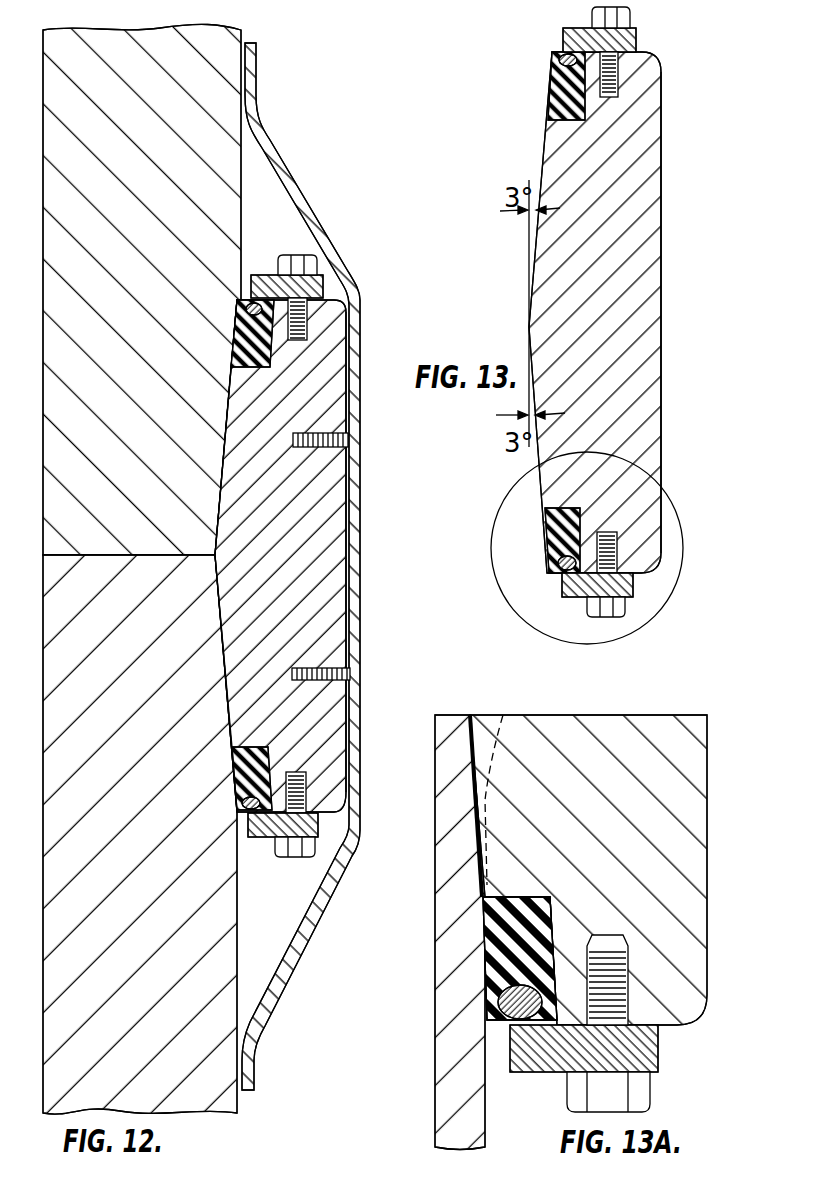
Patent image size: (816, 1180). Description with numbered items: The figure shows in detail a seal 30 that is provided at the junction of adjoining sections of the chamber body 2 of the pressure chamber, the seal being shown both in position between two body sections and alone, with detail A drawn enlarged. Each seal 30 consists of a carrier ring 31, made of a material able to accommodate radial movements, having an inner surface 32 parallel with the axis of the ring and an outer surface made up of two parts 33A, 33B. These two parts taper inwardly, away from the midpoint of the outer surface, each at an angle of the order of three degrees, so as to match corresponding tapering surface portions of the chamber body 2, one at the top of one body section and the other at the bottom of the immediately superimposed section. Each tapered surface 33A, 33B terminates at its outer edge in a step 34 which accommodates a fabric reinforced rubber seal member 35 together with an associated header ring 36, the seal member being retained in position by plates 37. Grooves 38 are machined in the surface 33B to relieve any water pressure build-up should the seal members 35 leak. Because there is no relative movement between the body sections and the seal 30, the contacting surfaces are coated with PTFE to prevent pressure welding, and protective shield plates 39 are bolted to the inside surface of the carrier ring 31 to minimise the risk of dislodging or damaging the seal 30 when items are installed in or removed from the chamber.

In FIG. 12, the chamber body 2 is at (111, 403).
In FIG. 13A, the chamber body 2 is at (460, 932).
In FIG. 12, the seal 30 is at (302, 566).
In FIG. 12, the carrier ring 31 is at (290, 630).
In FIG. 13, the carrier ring 31 is at (612, 163).
In FIG. 13A, the carrier ring 31 is at (642, 762).
In FIG. 12, the inner surface 32 is at (349, 520).
In FIG. 13, the inner surface 32 is at (661, 298).
In FIG. 12, the outer surface part 33A is at (222, 474).
In FIG. 12, the outer surface part 33B is at (228, 711).
In FIG. 12, the step 34 is at (232, 364).
In FIG. 12, the seal member 35 is at (250, 347).
In FIG. 13, the seal member 35 is at (560, 89).
In FIG. 13A, the seal member 35 is at (505, 950).
In FIG. 12, the header ring 36 is at (244, 304).
In FIG. 13A, the header ring 36 is at (503, 1022).
In FIG. 12, the plates 37 is at (272, 280).
In FIG. 13, the plates 37 is at (570, 42).
In FIG. 13A, the plates 37 is at (538, 1050).
In FIG. 13A, the grooves 38 is at (503, 783).
In FIG. 12, the protective shield plates 39 is at (352, 286).
In FIG. 13, the detail A is at (669, 598).